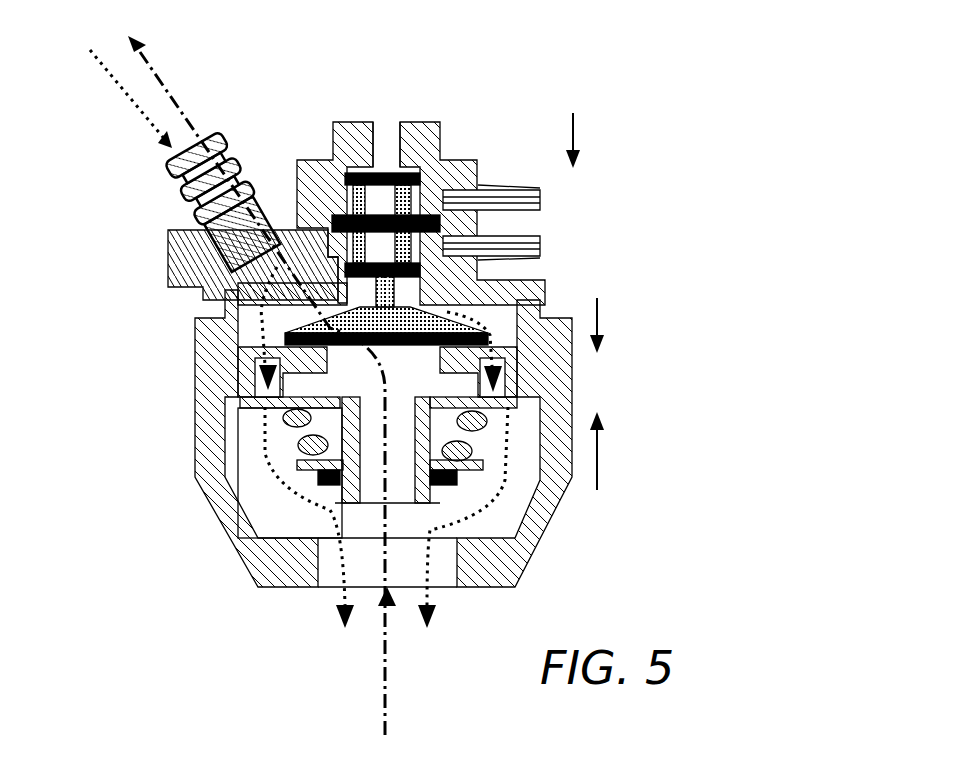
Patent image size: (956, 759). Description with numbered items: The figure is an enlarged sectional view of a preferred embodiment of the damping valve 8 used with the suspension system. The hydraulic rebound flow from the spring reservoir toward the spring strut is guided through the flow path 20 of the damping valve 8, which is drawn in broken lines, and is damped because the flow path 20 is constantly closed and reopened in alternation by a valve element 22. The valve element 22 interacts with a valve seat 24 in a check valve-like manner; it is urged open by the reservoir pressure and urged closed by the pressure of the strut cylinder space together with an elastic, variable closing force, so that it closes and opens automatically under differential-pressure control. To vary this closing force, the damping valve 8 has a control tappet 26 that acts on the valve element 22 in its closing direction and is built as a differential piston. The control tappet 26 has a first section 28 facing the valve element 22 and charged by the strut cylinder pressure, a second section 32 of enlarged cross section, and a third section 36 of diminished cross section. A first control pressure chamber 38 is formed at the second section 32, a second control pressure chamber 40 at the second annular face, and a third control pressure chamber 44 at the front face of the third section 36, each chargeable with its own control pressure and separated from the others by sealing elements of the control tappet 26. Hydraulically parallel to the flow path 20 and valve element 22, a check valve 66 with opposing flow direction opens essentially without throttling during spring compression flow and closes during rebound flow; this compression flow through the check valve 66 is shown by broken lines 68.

The damping valve 8 is at (426, 373).
The flow path 20 is at (170, 90).
The valve element 22 is at (298, 318).
The valve seat 24 is at (448, 350).
The control tappet 26 is at (400, 165).
The first section 28 is at (395, 293).
The second section 32 is at (353, 213).
The third section 36 is at (415, 198).
The first control pressure chamber 38 is at (430, 247).
The second control pressure chamber 40 is at (445, 200).
The third control pressure chamber 44 is at (385, 150).
The check valve 66 is at (245, 405).
The broken lines 68 is at (140, 110).